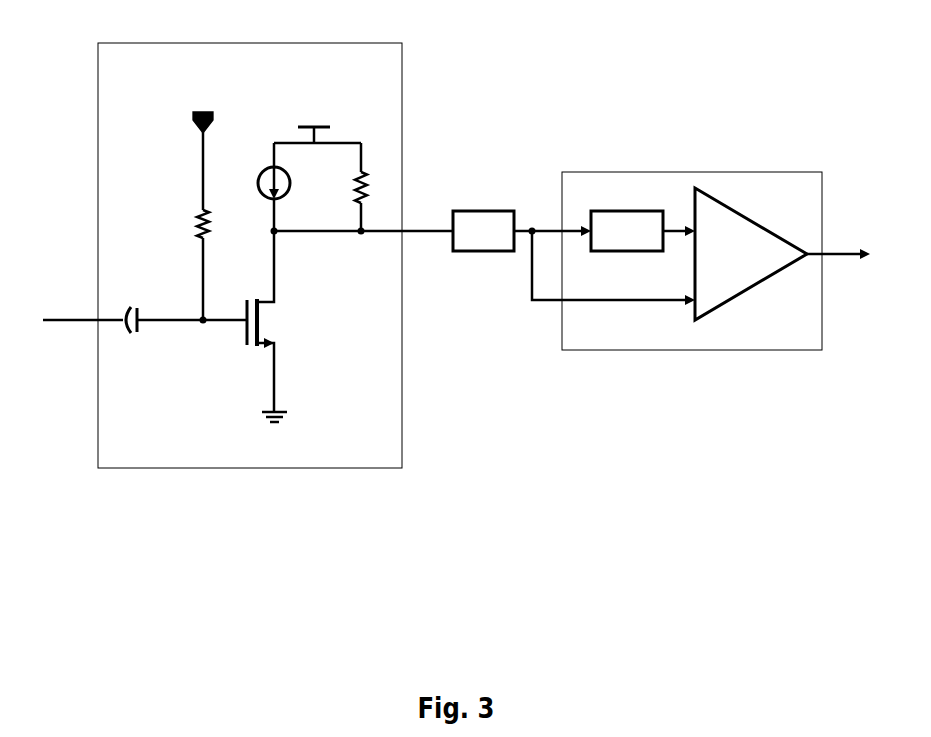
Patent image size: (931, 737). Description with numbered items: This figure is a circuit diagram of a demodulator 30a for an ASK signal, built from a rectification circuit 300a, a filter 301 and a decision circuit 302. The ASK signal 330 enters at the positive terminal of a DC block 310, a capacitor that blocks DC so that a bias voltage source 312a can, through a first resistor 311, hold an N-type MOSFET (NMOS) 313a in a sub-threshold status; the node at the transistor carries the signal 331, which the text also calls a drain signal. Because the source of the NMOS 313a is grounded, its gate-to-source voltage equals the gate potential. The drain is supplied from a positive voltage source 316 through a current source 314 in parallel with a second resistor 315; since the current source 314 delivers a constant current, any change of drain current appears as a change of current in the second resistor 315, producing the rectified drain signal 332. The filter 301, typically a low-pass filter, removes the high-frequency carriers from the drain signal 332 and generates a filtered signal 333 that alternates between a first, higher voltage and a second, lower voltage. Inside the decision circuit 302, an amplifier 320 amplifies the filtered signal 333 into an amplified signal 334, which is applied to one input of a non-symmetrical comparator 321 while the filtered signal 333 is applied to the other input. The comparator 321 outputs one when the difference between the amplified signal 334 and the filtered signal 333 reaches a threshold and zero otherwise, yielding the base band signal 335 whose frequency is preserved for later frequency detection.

The rectification circuit 300a is at (318, 43).
The bias voltage source 312a is at (190, 116).
The first resistor 311 is at (195, 209).
The DC block 310 is at (133, 300).
The ASK signal 330 is at (72, 313).
The drain signal 331 is at (204, 334).
The N-type MOSFET (NMOS) 313a is at (278, 329).
The current source 314 is at (263, 163).
The positive voltage source 316 is at (317, 118).
The second resistor 315 is at (368, 168).
The drain signal 332 is at (427, 222).
The filter 301 is at (470, 211).
The filtered signal 333 is at (541, 222).
The amplifier 320 is at (625, 208).
The amplified signal 334 is at (676, 222).
The comparator 321 is at (758, 220).
The decision circuit 302 is at (695, 172).
The base band signal 335 is at (845, 248).
The demodulator 30a is at (577, 411).